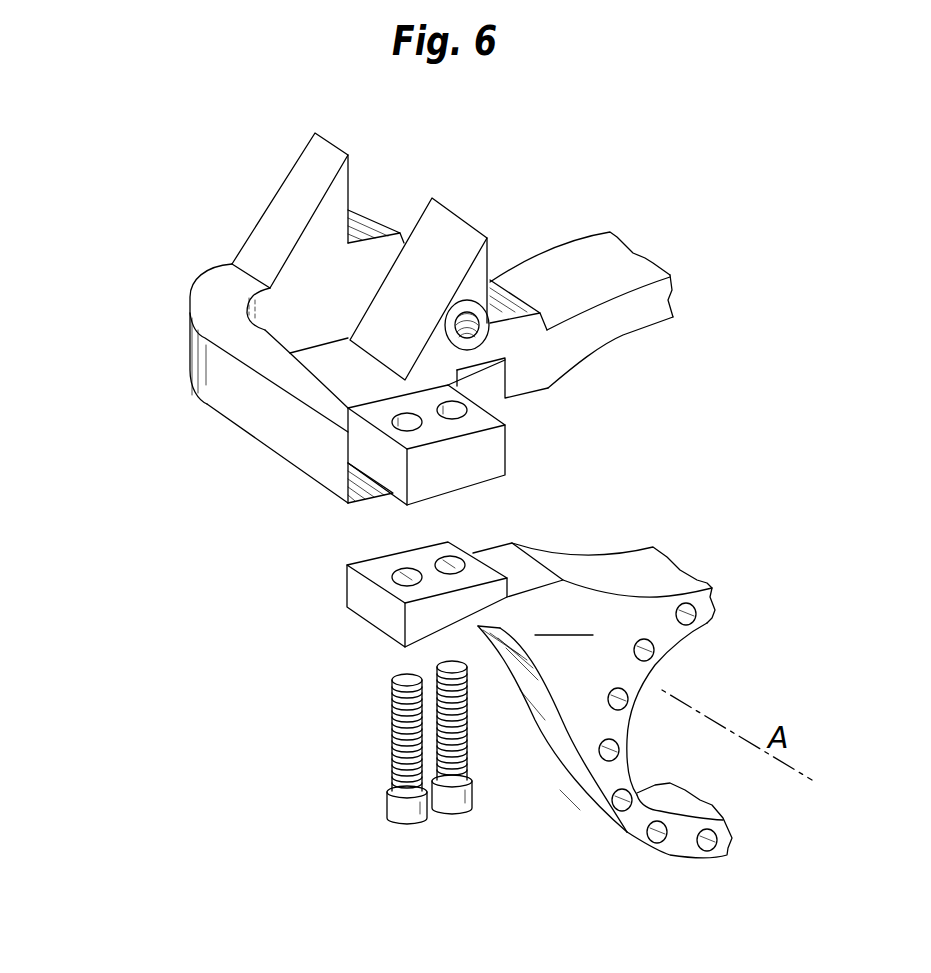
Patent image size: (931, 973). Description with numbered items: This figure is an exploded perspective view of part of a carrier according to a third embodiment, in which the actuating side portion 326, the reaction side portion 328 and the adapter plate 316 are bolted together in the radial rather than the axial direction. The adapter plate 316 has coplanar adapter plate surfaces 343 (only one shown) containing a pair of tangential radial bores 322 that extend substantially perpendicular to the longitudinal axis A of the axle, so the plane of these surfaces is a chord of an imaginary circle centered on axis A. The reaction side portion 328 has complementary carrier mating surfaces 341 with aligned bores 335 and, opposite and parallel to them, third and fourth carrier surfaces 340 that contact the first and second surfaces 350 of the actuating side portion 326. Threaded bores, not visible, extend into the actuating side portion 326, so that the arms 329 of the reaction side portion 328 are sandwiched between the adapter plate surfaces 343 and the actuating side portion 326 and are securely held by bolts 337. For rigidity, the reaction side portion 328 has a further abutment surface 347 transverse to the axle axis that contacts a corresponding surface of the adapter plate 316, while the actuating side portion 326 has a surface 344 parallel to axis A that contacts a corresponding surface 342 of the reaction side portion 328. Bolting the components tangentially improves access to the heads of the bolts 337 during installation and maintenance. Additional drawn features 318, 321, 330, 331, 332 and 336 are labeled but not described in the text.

The adapter plate 316 is at (602, 700).
The holes in plate 318 is at (643, 641).
The rib of plate 321 is at (673, 803).
The tangential radial bores 322 is at (449, 563).
The actuating side portion 326 is at (432, 265).
The reaction side portion 328 is at (232, 264).
The arms 329 is at (277, 427).
The arm upper surface 330 is at (505, 300).
The arm 331 is at (620, 310).
The wedge block 332 is at (365, 208).
The aligned bores 335 is at (410, 432).
The threaded hole 336 is at (473, 338).
The bolts 337 is at (450, 810).
The third and fourth carrier surfaces 340 is at (352, 436).
The carrier mating surfaces 341 is at (488, 482).
The corresponding surface 342 is at (507, 436).
The coplanar adapter plate surfaces 343 is at (407, 592).
The surface 344 is at (490, 383).
The further abutment surface 347 is at (362, 490).
The first and second surfaces 350 is at (437, 379).